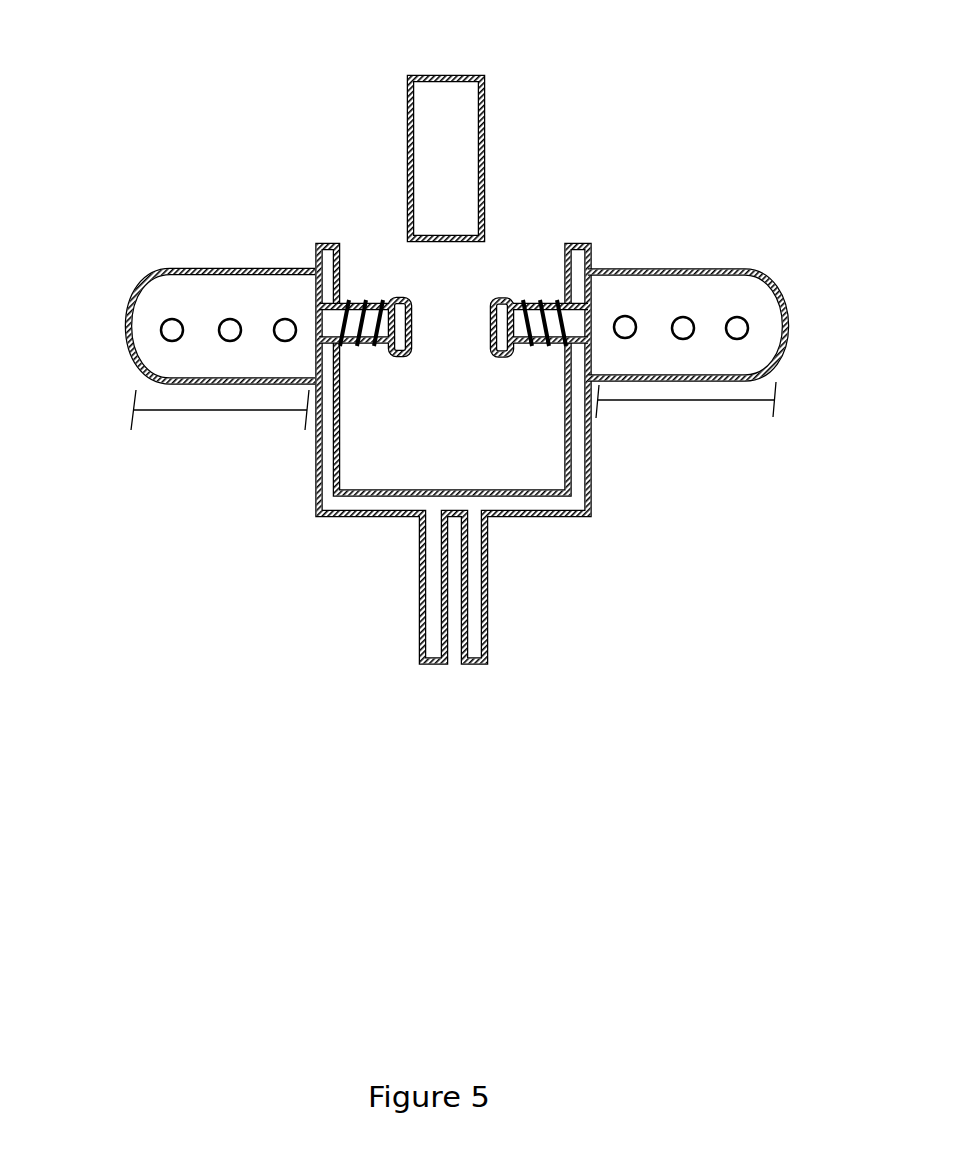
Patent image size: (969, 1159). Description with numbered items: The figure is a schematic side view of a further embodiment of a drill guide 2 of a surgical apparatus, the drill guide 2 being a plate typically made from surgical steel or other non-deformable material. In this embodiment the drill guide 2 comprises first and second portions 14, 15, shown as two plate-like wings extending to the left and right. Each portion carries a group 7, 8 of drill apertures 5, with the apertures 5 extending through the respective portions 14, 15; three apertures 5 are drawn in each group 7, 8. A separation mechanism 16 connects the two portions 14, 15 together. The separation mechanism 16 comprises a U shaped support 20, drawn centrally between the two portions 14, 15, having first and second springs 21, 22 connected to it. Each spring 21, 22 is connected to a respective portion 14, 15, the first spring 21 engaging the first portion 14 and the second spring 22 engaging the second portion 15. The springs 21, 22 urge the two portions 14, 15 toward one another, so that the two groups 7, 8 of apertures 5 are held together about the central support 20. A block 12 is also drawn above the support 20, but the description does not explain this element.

The drill guide 2 is at (180, 632).
The apertures 5 is at (285, 327).
The group of drill apertures 7 is at (220, 422).
The group of drill apertures 8 is at (686, 411).
The mounting block 12 is at (467, 107).
The first portion 14 is at (160, 277).
The second portion 15 is at (757, 277).
The separation mechanism 16 is at (635, 602).
The U shaped support 20 is at (422, 540).
The first spring 21 is at (373, 300).
The second spring 22 is at (528, 300).